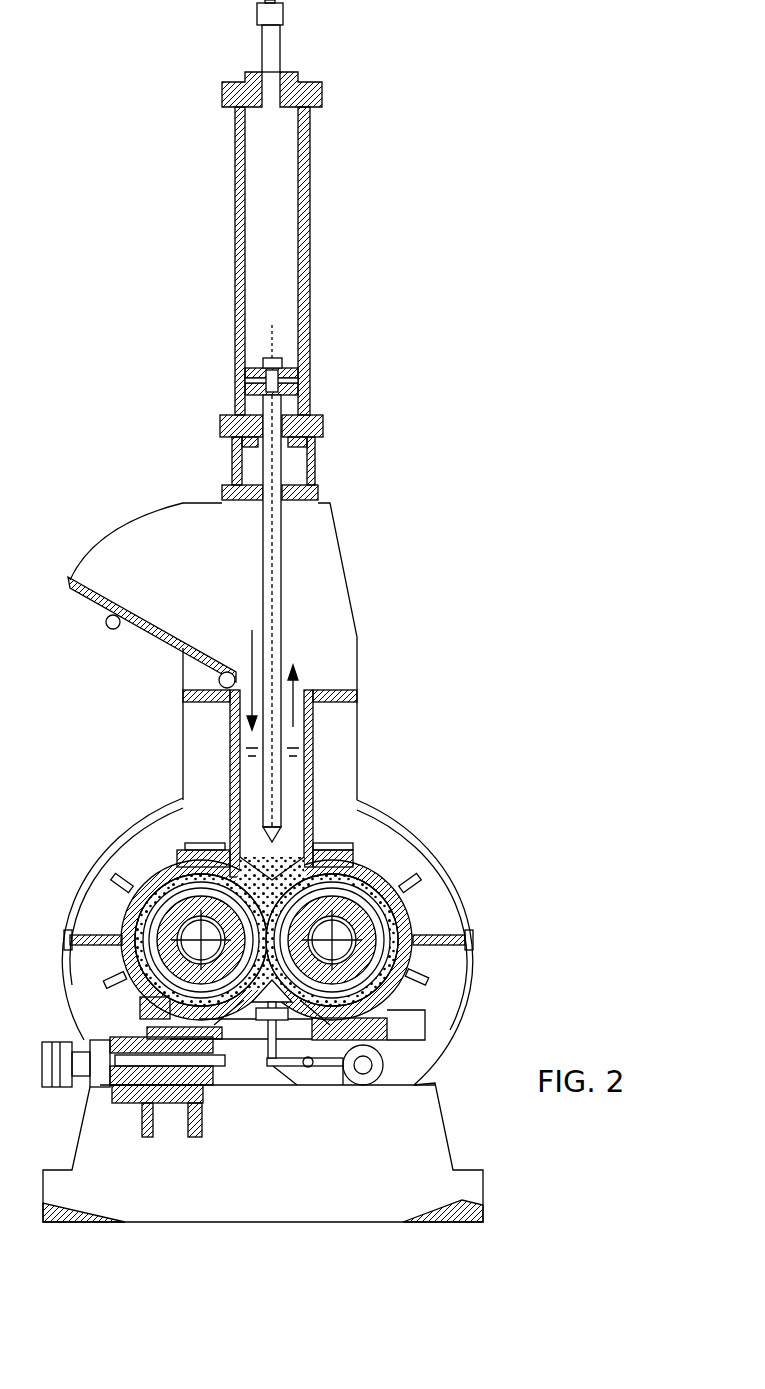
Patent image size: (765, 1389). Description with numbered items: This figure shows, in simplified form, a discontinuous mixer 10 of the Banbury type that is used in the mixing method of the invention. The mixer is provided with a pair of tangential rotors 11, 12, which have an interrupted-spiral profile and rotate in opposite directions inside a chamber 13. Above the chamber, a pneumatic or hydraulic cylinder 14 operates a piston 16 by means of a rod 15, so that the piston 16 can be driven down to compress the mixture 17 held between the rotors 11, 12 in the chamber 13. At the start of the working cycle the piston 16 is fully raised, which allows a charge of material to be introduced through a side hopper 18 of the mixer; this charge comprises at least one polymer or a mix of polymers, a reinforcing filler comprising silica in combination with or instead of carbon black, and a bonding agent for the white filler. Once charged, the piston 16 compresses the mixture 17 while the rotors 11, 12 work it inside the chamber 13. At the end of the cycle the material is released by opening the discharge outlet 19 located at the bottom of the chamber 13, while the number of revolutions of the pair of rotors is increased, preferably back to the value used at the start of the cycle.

The discontinuous mixer 10 is at (407, 555).
The tangential rotor 11 is at (410, 922).
The tangential rotor 12 is at (170, 880).
The chamber 13 is at (420, 930).
The pneumatic or hydraulic cylinder 14 is at (310, 210).
The rod 15 is at (274, 627).
The piston 16 is at (276, 808).
The mixture 17 is at (370, 922).
The side hopper 18 is at (145, 548).
The discharge outlet 19 is at (388, 1004).